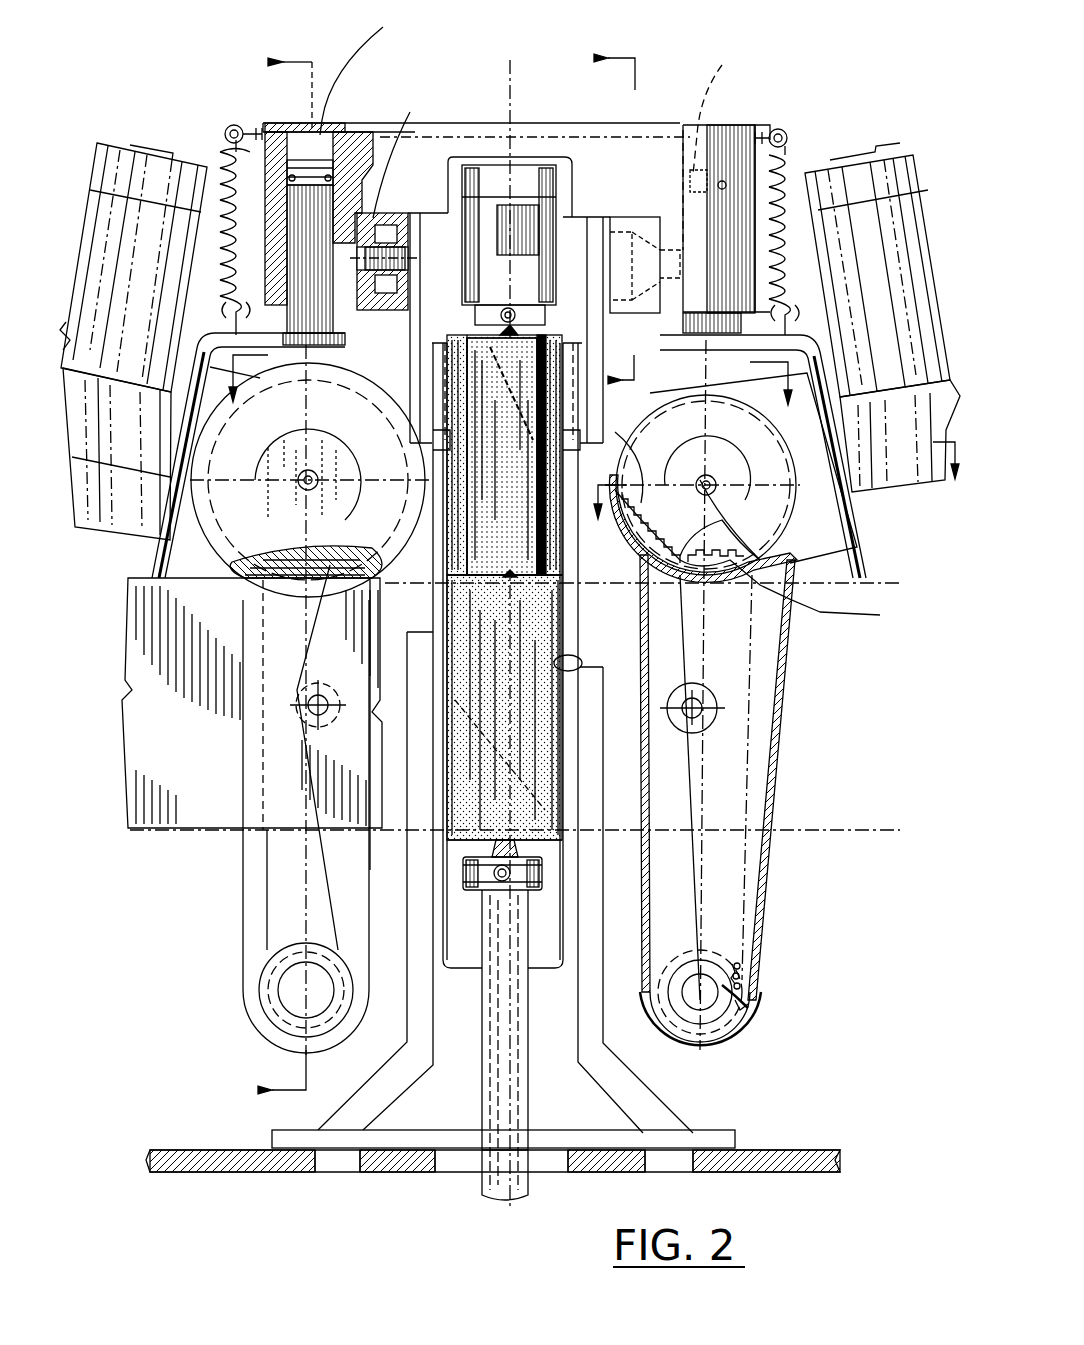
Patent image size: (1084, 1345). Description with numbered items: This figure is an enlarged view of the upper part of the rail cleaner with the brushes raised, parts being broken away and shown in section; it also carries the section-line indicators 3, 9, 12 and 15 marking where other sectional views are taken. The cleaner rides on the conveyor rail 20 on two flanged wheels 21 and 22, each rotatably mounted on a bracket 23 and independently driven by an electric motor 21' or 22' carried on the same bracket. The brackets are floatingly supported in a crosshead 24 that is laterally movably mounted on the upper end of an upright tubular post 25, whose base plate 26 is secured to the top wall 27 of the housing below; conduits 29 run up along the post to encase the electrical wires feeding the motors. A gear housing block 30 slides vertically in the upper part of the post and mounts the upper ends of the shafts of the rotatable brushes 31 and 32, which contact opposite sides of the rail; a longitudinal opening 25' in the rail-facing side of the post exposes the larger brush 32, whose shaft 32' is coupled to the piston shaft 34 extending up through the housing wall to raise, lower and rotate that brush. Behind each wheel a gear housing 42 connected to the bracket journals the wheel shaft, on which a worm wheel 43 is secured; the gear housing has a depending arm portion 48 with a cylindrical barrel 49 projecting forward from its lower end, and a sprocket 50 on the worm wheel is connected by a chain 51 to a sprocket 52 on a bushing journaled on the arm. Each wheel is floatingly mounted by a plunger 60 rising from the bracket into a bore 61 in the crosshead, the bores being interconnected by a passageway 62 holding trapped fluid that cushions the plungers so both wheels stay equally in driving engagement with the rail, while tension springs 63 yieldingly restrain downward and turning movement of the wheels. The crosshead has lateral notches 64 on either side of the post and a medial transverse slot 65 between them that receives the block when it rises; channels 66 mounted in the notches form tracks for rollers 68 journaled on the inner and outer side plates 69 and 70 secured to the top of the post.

The section line 3- 3 is at (269, 576).
The section line 9- 9 is at (508, 399).
The section line 12- 12 is at (781, 495).
The section line 15- 15 is at (622, 218).
The conveyor rail 20 is at (205, 825).
The flanged wheel 21 is at (308, 480).
The electric motor 21' is at (133, 314).
The flanged wheel 22 is at (706, 485).
The electric motor 22' is at (887, 308).
The bracket 23 is at (205, 345).
The crosshead 24 is at (458, 128).
The post 25 is at (505, 738).
The longitudinal opening 25' is at (601, 652).
The base plate 26 is at (712, 1138).
The top wall 27 is at (778, 1158).
The conduits 29 is at (413, 672).
The gear housing block 30 is at (506, 282).
The rotatable brush 31 is at (514, 460).
The rotatable brush 32 is at (504, 705).
The shaft 32' is at (443, 872).
The piston shaft 34 is at (492, 935).
The gear housing 42 is at (217, 405).
The worm wheel 43 is at (616, 456).
The depending arm portion 48 is at (773, 742).
The cylindrical barrel 49 is at (262, 975).
The sprocket 50 is at (766, 555).
The chain 51 is at (742, 968).
The sprocket 52 is at (725, 988).
The plunger 60 is at (322, 313).
The bore 61 is at (537, 125).
The passageway 62 is at (355, 135).
The tension spring 63 is at (207, 140).
The notch 64 is at (426, 220).
The medial transverse slot 65 is at (527, 157).
The channel 66 is at (643, 232).
The roller 68 is at (397, 295).
The inner side plate 69 is at (427, 340).
The outer side plate 70 is at (428, 352).